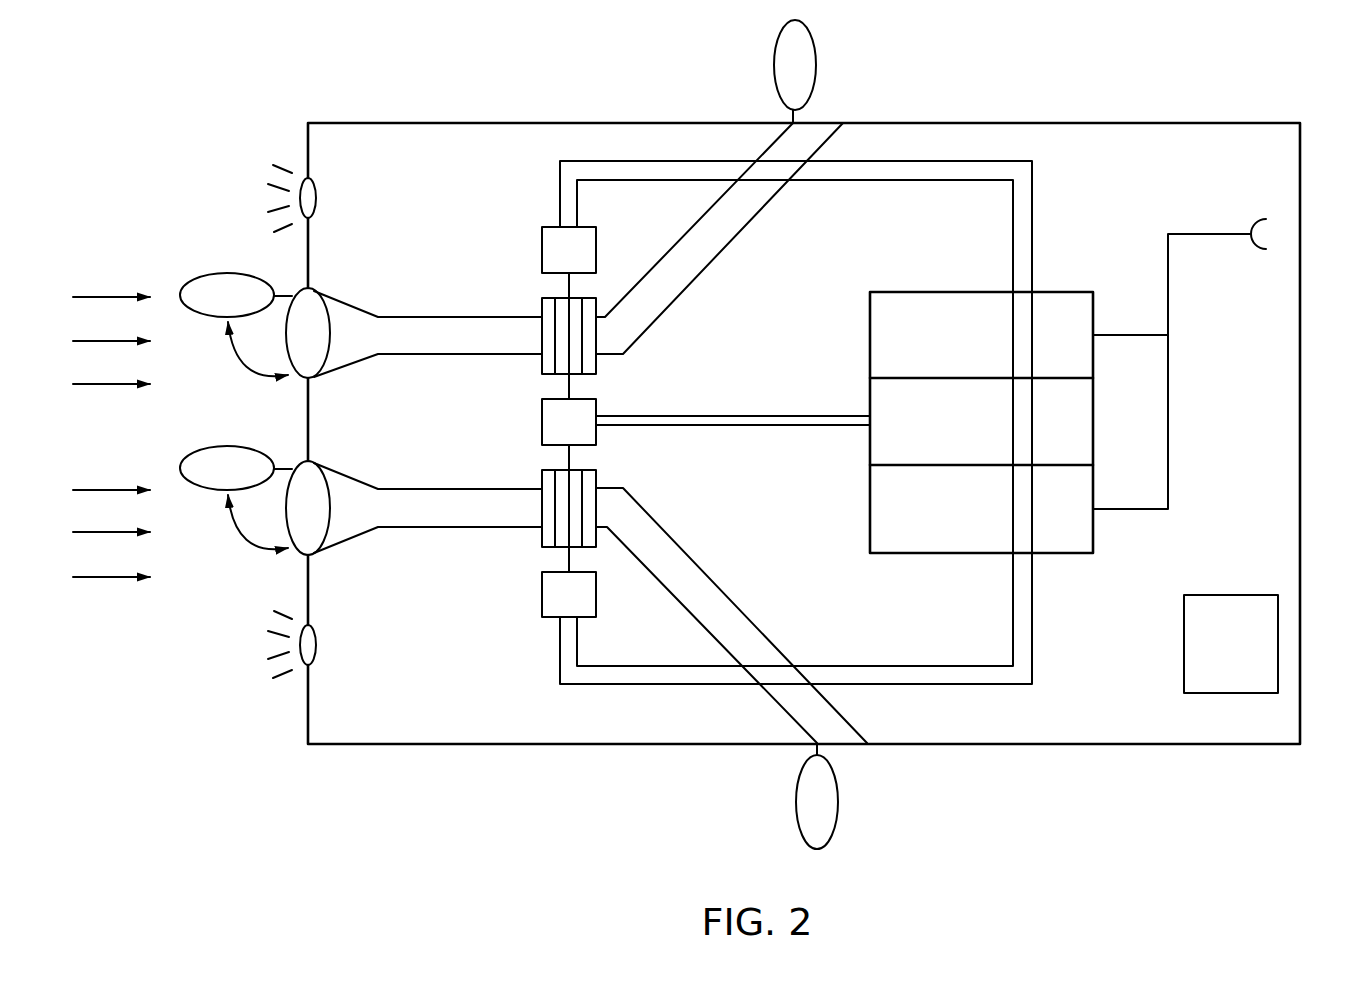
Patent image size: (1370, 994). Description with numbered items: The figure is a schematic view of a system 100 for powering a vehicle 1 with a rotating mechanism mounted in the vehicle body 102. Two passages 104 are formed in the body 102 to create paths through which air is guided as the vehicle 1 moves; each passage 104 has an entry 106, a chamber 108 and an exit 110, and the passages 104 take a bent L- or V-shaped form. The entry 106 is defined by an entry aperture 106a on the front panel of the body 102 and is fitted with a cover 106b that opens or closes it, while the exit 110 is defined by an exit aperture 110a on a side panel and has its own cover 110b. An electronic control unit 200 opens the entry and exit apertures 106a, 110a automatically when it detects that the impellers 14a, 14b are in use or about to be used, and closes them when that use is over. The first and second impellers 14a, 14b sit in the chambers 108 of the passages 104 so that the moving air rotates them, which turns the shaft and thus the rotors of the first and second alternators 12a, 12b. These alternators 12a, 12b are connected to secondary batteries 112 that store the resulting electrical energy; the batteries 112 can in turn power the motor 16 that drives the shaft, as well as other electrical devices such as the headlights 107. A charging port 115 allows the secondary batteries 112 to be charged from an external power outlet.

The vehicle 1 is at (553, 80).
The system 100 is at (1197, 63).
The body 102 is at (388, 122).
The passages 104 is at (480, 311).
The entry 106 is at (316, 384).
The entry aperture 106a is at (331, 338).
The cover 106b is at (212, 273).
The headlights 107 is at (320, 184).
The chamber 108 is at (538, 357).
The exit 110 is at (890, 96).
The exit aperture 110a is at (829, 112).
The cover 110b is at (775, 68).
The secondary batteries 112 is at (1058, 292).
The charging port 115 is at (1262, 204).
The first alternator 12a is at (542, 252).
The second alternator 12b is at (542, 595).
The first impeller 14a is at (597, 363).
The second impeller 14b is at (596, 477).
The motor 16 is at (596, 408).
The electronic control unit (ECU) 200 is at (1210, 660).